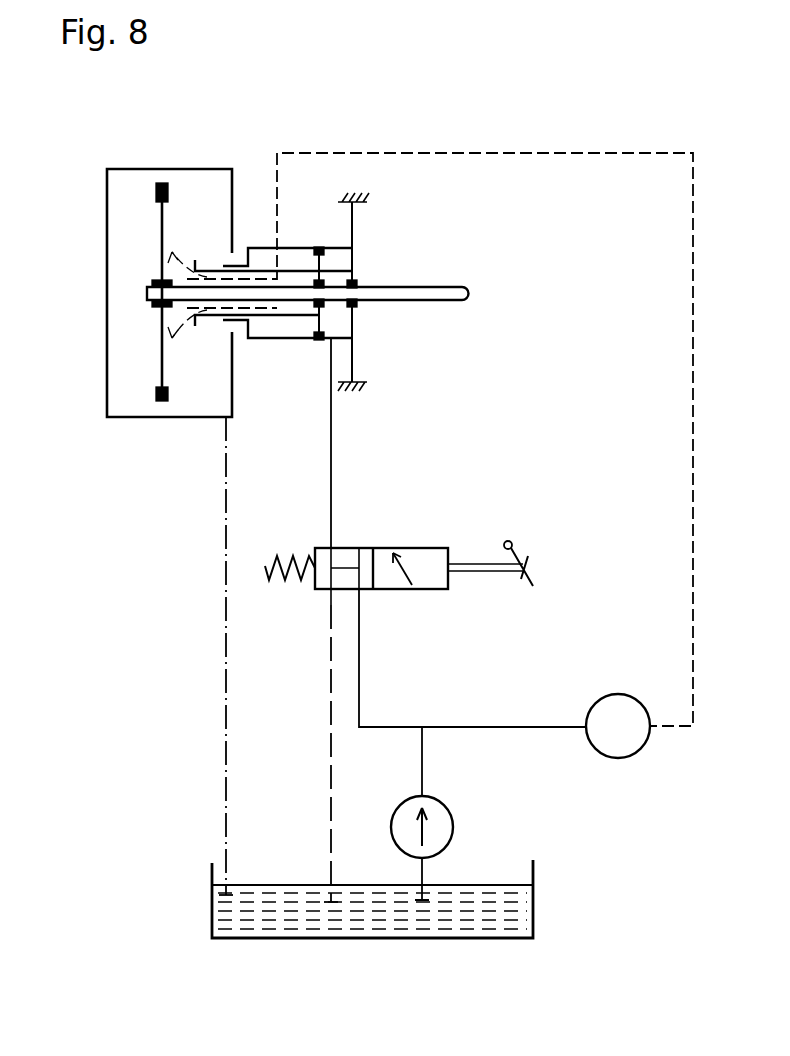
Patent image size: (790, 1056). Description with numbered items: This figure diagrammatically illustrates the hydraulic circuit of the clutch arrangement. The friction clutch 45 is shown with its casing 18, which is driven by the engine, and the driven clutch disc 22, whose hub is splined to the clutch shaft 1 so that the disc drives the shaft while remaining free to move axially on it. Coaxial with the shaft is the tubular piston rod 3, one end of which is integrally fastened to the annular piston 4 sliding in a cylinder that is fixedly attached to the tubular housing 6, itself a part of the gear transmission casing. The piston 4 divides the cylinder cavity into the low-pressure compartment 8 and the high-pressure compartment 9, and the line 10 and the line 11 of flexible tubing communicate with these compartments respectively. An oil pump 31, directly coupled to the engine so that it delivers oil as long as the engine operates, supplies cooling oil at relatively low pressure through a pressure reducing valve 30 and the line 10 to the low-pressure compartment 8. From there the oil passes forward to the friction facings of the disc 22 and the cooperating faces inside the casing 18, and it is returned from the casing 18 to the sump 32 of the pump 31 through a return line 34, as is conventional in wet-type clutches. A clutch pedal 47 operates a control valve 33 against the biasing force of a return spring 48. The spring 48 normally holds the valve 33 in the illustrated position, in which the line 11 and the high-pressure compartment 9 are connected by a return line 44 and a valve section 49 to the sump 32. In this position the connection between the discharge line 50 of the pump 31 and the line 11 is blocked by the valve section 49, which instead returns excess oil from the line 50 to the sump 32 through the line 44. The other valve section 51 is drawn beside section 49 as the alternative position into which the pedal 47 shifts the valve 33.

The clutch shaft 1 is at (430, 285).
The piston rod 3 is at (260, 271).
The annular piston 4 is at (320, 268).
The tubular housing 6 is at (352, 225).
The low-pressure compartment 8 is at (288, 328).
The high-pressure compartment 9 is at (338, 320).
The line 10 is at (693, 416).
The line 11 is at (332, 453).
The casing 18 is at (200, 168).
The driven clutch disc 22 is at (162, 234).
The pressure reducing valve 30 is at (627, 754).
The oil pump 31 is at (437, 808).
The sump 32 is at (533, 912).
The control valve 33 is at (435, 548).
The return line 34 is at (227, 773).
The return line 44 is at (333, 791).
The friction clutch 45 is at (142, 184).
The clutch pedal 47 is at (517, 548).
The return spring 48 is at (284, 562).
The valve section 49 is at (345, 557).
The discharge line 50 is at (360, 688).
The valve position 51 is at (417, 565).